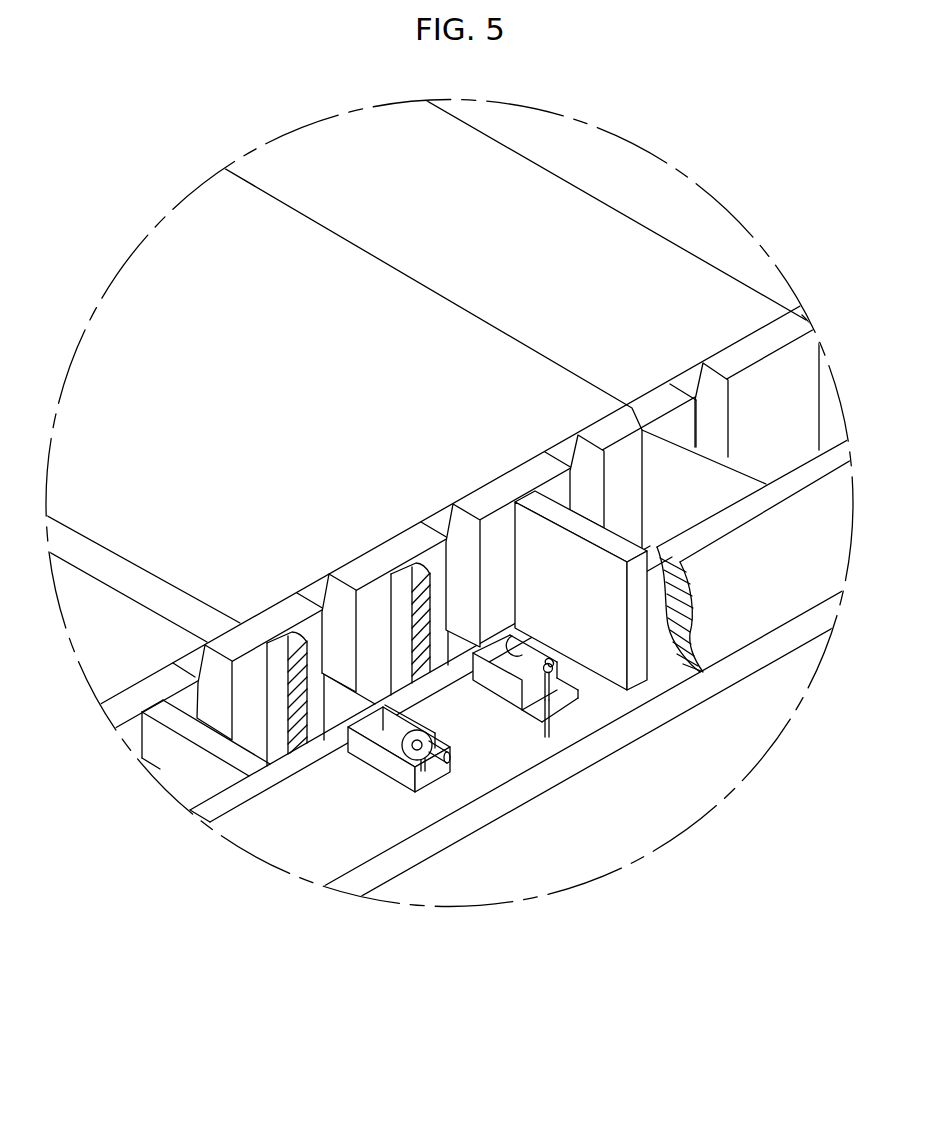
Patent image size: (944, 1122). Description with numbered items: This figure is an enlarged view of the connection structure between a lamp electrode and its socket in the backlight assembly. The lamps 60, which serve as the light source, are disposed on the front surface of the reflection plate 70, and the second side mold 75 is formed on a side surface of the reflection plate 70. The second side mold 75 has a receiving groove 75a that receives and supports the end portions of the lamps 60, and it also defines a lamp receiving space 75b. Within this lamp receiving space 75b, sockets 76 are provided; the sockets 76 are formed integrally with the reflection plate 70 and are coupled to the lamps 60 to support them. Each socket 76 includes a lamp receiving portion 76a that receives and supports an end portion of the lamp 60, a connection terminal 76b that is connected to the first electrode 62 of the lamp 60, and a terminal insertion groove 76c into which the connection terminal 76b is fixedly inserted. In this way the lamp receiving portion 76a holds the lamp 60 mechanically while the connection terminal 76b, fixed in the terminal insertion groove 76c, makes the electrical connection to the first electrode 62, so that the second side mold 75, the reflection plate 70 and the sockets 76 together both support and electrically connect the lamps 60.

The lamp 60 is at (124, 562).
The first electrode 62 is at (441, 762).
The reflection plate 70 is at (556, 809).
The second side mold 75 is at (762, 612).
The receiving groove 75a is at (466, 530).
The lamp receiving space 75b is at (671, 487).
The socket 76 is at (325, 760).
The lamp receiving portion 76a is at (512, 665).
The connection terminal 76b is at (552, 686).
The terminal insertion groove 76c is at (551, 735).